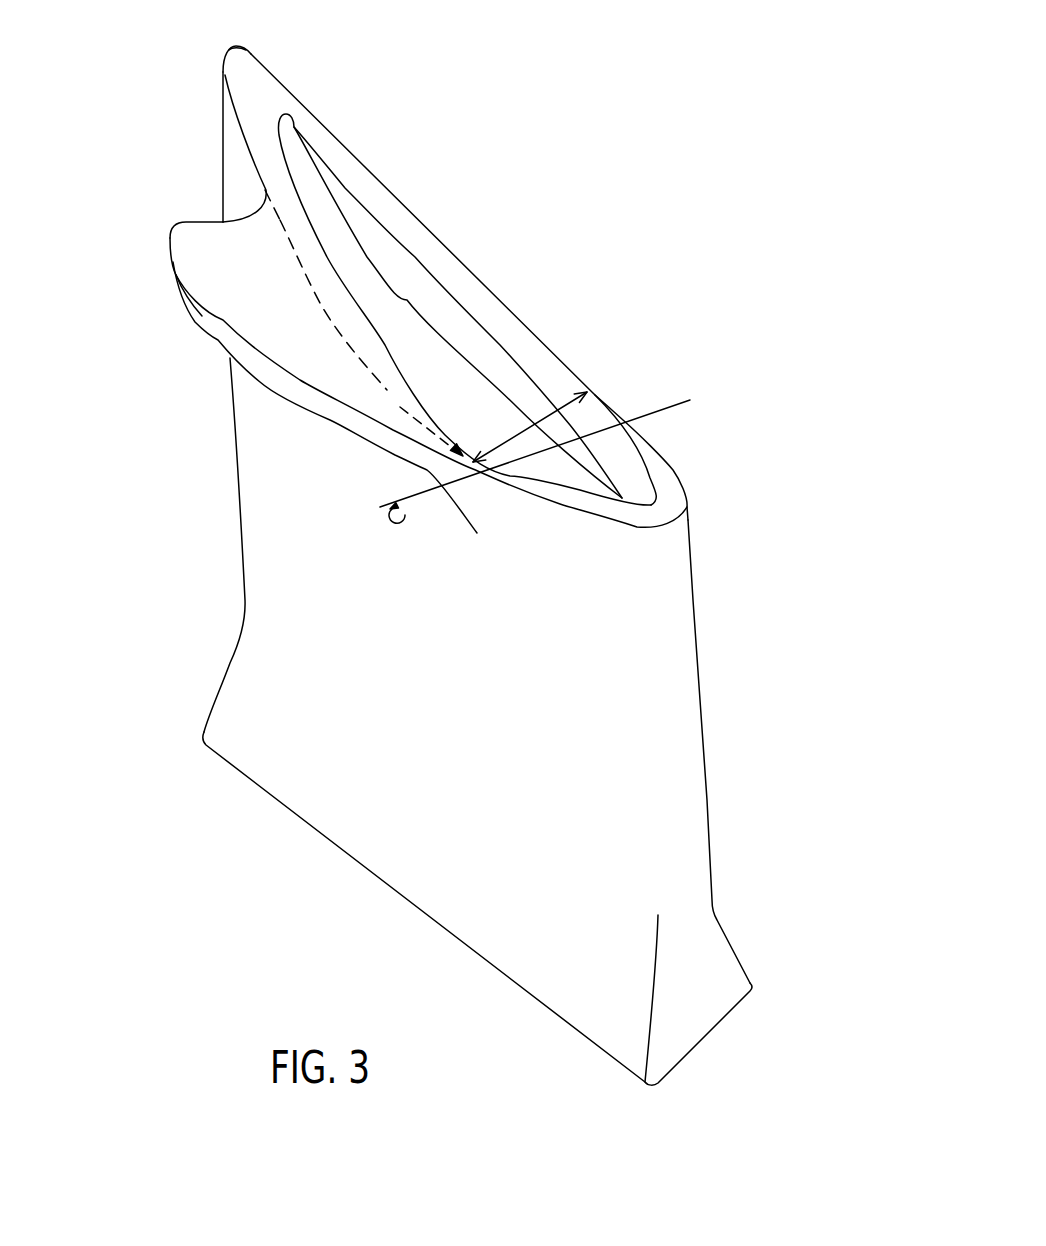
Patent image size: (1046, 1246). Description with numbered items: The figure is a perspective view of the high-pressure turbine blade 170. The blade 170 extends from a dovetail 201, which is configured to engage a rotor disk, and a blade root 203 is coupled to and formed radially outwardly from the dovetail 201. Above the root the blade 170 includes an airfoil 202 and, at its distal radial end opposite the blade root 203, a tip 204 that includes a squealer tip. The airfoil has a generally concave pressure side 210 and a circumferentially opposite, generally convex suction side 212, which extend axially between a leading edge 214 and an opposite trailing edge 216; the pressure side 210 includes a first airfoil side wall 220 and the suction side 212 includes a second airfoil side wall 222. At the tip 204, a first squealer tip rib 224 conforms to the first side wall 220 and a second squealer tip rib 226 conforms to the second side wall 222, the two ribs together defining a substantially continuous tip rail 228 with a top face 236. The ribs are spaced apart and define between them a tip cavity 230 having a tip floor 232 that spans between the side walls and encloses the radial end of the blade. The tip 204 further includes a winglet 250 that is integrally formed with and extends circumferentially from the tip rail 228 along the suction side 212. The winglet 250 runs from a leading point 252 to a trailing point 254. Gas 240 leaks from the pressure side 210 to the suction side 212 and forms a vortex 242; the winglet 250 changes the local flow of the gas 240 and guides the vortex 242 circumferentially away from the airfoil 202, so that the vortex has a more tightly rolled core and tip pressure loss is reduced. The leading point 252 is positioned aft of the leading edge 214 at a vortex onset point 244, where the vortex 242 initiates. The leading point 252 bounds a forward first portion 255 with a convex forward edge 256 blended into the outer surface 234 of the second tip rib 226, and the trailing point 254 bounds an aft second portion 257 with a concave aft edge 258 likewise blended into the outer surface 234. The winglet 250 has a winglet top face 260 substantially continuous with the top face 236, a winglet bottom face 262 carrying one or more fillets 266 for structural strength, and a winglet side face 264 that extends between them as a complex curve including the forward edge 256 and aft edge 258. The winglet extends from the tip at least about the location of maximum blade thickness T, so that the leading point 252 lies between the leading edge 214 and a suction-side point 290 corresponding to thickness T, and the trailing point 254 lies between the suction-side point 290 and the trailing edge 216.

The HP turbine blade 170 is at (665, 110).
The dovetail 201 is at (224, 663).
The airfoil 202 is at (703, 670).
The blade root 203 is at (694, 976).
The tip 204 is at (300, 80).
The pressure side 210 is at (504, 304).
The suction side 212 is at (239, 143).
The leading edge 214 is at (675, 507).
The trailing edge 216 is at (233, 46).
The first airfoil side wall 220 is at (652, 632).
The second airfoil side wall 222 is at (466, 693).
The first squealer tip rib 224 is at (407, 227).
The second squealer tip rib 226 is at (583, 502).
The tip rail 228 is at (661, 472).
The tip cavity 230 is at (531, 390).
The tip floor 232 is at (464, 309).
The outer surface of second tip rib 234 is at (565, 521).
The top face of tip rail 236 is at (276, 101).
The gas 240 is at (670, 410).
The vortex 242 is at (386, 527).
The vortex onset point 244 is at (479, 490).
The winglet 250 is at (202, 280).
The leading point 252 is at (488, 474).
The trailing point 254 is at (272, 187).
The forward first portion 255 is at (341, 375).
The forward edge 256 is at (340, 423).
The aft second portion 257 is at (204, 238).
The aft edge 258 is at (190, 220).
The winglet top face 260 is at (300, 321).
The winglet bottom face 262 is at (349, 449).
The winglet side face 264 is at (216, 340).
The fillet 266 is at (427, 473).
The suction-side point 290 is at (470, 460).
The maximum blade thickness T is at (560, 395).